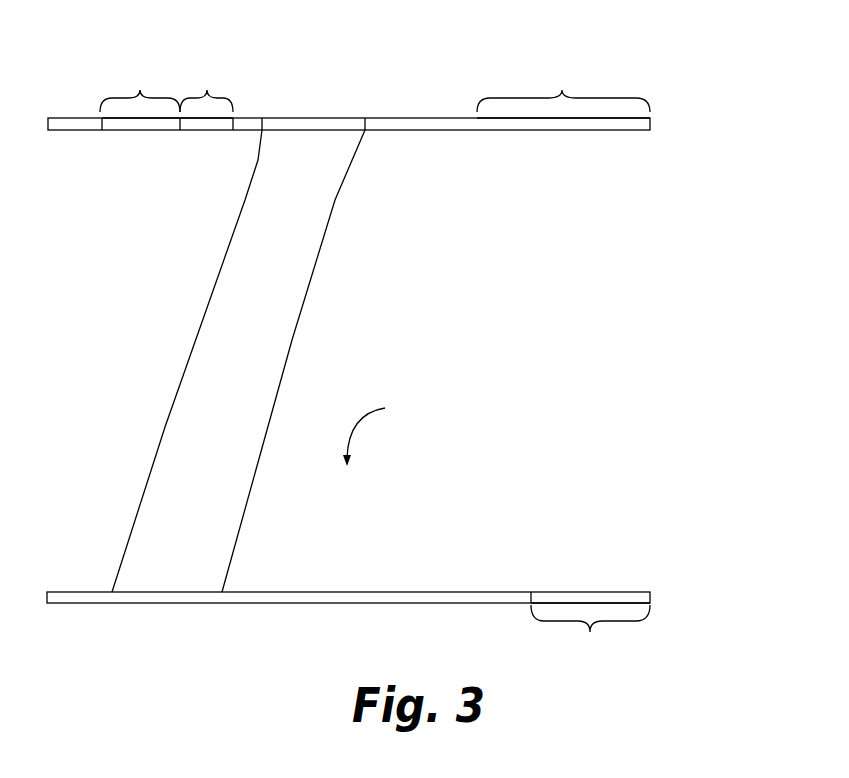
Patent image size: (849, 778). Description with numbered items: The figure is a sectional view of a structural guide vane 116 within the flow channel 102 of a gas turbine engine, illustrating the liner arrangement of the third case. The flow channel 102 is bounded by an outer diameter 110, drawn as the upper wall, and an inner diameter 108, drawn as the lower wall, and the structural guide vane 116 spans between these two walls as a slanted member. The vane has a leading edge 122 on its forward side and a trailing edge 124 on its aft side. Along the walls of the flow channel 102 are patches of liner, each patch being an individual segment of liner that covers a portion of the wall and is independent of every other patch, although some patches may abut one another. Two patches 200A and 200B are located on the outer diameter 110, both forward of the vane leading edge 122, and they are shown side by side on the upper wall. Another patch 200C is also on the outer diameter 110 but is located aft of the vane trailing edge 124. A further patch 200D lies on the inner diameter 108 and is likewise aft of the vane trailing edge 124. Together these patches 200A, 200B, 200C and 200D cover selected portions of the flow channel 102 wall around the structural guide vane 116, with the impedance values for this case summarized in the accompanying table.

The flow channel 102 is at (697, 249).
The inner diameter 108 is at (354, 582).
The outer diameter 110 is at (425, 140).
The structural guide vane 116 is at (279, 313).
The leading edge 122 is at (220, 248).
The trailing edge 124 is at (305, 292).
The patch 200A is at (140, 90).
The patch 200B is at (207, 90).
The patch 200C is at (562, 90).
The patch 200D is at (590, 632).